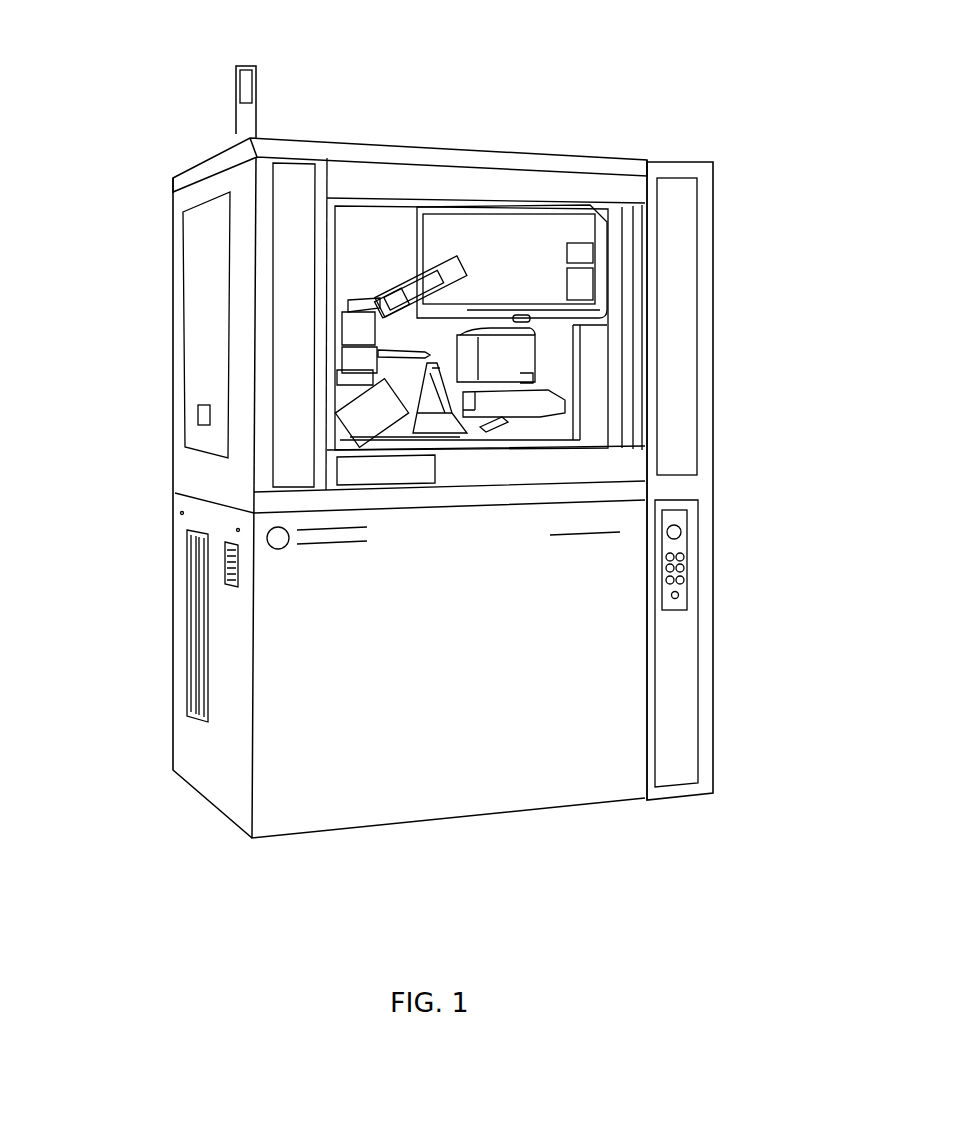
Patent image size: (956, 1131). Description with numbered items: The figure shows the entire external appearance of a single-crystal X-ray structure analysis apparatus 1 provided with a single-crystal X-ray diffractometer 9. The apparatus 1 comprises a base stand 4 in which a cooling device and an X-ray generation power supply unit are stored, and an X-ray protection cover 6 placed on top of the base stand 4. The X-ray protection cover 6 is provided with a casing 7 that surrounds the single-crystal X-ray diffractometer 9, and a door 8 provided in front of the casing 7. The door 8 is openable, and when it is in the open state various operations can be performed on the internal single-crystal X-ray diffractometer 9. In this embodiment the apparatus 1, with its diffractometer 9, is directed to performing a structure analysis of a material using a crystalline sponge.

The single-crystal X-ray structure analysis apparatus 1 is at (185, 105).
The base stand 4 is at (768, 498).
The X-ray protection cover 6 is at (767, 158).
The casing 7 is at (213, 295).
The door 8 is at (360, 247).
The single-crystal X-ray diffractometer 9 is at (437, 368).